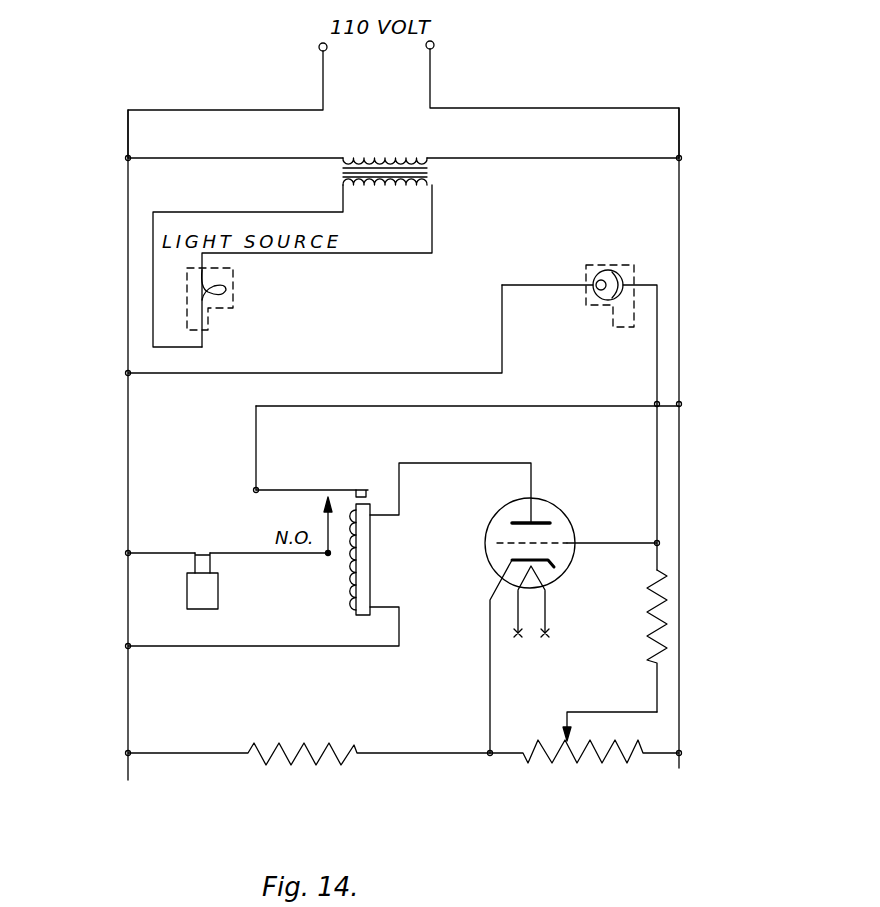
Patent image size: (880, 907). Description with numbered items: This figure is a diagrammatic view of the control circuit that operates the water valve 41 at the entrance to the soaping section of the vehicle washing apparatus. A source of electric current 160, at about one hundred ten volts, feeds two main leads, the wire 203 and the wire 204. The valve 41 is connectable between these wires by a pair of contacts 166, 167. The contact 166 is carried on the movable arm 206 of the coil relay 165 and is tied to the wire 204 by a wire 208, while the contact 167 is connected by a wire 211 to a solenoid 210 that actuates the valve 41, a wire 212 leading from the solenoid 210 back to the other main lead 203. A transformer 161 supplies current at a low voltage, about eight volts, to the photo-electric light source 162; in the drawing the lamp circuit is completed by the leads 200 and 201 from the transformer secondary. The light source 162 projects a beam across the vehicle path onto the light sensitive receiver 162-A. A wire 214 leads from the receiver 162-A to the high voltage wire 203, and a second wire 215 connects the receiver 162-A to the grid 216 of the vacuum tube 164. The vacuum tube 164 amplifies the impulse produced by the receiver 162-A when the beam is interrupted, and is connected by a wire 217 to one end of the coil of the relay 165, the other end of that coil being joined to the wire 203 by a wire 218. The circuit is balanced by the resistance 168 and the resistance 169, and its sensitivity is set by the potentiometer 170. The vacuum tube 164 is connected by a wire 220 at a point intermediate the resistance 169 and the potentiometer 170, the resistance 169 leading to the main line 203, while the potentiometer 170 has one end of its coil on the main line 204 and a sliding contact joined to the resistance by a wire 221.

The source of electric current 160 is at (375, 43).
The transformer 161 is at (432, 173).
The photo-electric light source 162 is at (228, 282).
The light sensitive receiver 162-A is at (585, 276).
The vacuum tube 164 is at (556, 510).
The coil relay 165 is at (352, 568).
The contact 166 is at (363, 489).
The contact 167 is at (328, 495).
The resistance 168 is at (645, 645).
The resistance 169 is at (340, 762).
The potentiometer 170 is at (606, 760).
The lamp circuit lead 200 is at (305, 212).
The lamp circuit lead 201 is at (340, 253).
The wire 203 is at (128, 178).
The wire 204 is at (682, 240).
The movable arm 206 is at (338, 488).
The wire 208 is at (503, 406).
The solenoid 210 is at (200, 564).
The wire 211 is at (278, 555).
The wire 212 is at (136, 551).
The wire 214 is at (445, 373).
The wire 215 is at (657, 437).
The grid 216 is at (543, 540).
The wire 217 is at (425, 463).
The wire 218 is at (250, 648).
The wire 220 is at (490, 655).
The wire 221 is at (610, 712).
The water valve 41 is at (203, 600).